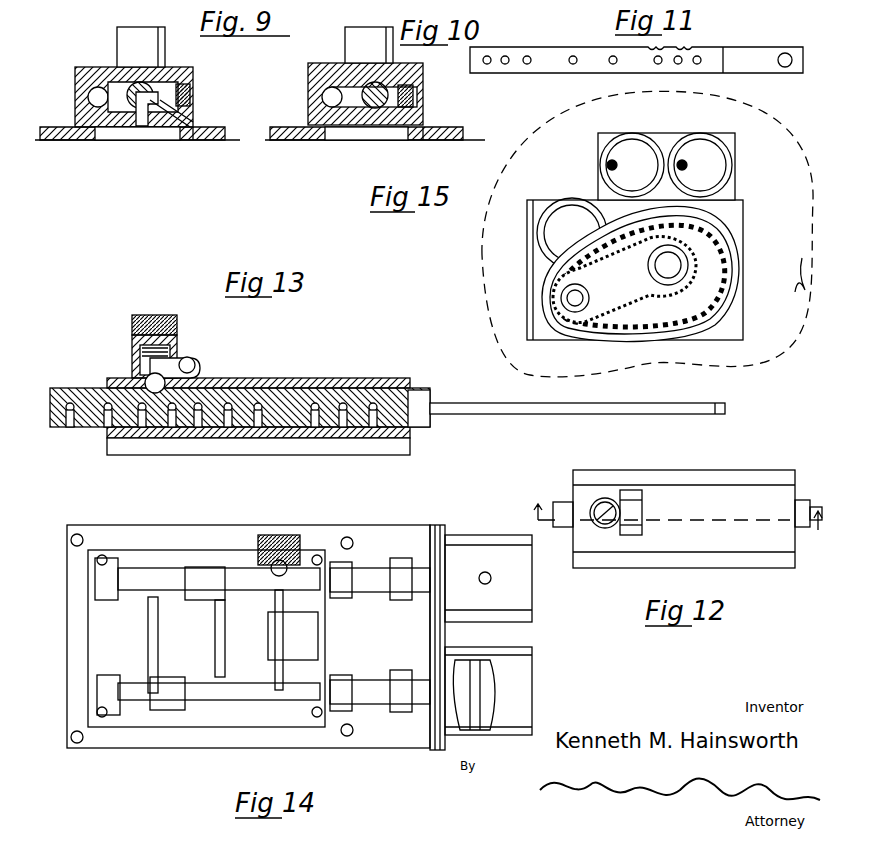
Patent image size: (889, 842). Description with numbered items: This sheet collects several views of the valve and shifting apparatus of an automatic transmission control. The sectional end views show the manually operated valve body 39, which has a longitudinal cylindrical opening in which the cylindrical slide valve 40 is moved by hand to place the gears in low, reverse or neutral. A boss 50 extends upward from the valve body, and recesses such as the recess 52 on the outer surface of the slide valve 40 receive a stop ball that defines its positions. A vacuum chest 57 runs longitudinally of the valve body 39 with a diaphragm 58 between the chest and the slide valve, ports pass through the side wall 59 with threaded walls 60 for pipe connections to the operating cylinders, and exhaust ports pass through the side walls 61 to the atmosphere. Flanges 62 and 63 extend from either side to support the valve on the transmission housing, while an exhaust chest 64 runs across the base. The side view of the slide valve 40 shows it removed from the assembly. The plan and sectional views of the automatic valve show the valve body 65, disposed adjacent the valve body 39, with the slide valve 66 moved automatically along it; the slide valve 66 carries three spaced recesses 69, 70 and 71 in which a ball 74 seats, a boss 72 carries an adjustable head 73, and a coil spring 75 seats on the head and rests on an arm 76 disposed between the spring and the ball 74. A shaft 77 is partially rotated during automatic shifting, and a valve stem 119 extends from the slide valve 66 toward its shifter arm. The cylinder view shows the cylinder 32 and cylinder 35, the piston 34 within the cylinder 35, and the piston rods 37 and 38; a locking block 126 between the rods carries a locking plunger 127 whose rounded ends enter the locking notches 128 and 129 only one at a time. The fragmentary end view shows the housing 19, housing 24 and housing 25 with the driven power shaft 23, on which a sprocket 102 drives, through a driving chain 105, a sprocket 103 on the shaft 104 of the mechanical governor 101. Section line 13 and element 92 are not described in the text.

In FIG. 12, the section line 13 is at (678, 530).
In FIG. 15, the housing 19 is at (718, 232).
In FIG. 15, the driven power shaft 23 is at (792, 277).
In FIG. 15, the housing 24 is at (548, 200).
In FIG. 15, the housing 25 is at (745, 200).
In FIG. 14, the housing 25 is at (200, 727).
In FIG. 15, the cylinder 32 is at (732, 150).
In FIG. 14, the cylinder 32 is at (467, 560).
In FIG. 14, the piston 34 is at (490, 680).
In FIG. 15, the cylinder 35 is at (640, 140).
In FIG. 14, the cylinder 35 is at (520, 655).
In FIG. 14, the piston rod 37 is at (365, 578).
In FIG. 14, the piston rod 38 is at (380, 700).
In FIG. 9, the valve body 39 is at (88, 130).
In FIG. 10, the valve body 39 is at (418, 80).
In FIG. 9, the slide valve 40 is at (150, 86).
In FIG. 10, the slide valve 40 is at (384, 85).
In FIG. 11, the slide valve 40 is at (540, 55).
In FIG. 9, the boss 50 is at (127, 46).
In FIG. 10, the boss 50 is at (355, 46).
In FIG. 11, the recess 52 is at (692, 47).
In FIG. 9, the vacuum chest 57 is at (88, 98).
In FIG. 10, the vacuum chest 57 is at (322, 97).
In FIG. 9, the diaphragm 58 is at (82, 82).
In FIG. 9, the side wall 59 is at (196, 115).
In FIG. 9, the threaded port walls 60 is at (192, 90).
In FIG. 9, the side walls 61 is at (141, 122).
In FIG. 9, the flange 62 is at (45, 142).
In FIG. 10, the flange 62 is at (285, 138).
In FIG. 9, the flange 63 is at (205, 132).
In FIG. 10, the flange 63 is at (440, 130).
In FIG. 9, the exhaust chest 64 is at (165, 133).
In FIG. 10, the exhaust chest 64 is at (348, 132).
In FIG. 13, the valve body 65 is at (380, 385).
In FIG. 12, the valve body 65 is at (708, 495).
In FIG. 13, the slide valve 66 is at (305, 388).
In FIG. 12, the slide valve 66 is at (800, 498).
In FIG. 13, the recess 69 is at (86, 430).
In FIG. 13, the recess 70 is at (152, 440).
In FIG. 13, the recess 71 is at (188, 440).
In FIG. 13, the boss 72 is at (132, 340).
In FIG. 12, the boss 72 is at (605, 535).
In FIG. 13, the adjustable head 73 is at (160, 318).
In FIG. 12, the adjustable head 73 is at (605, 498).
In FIG. 13, the ball 74 is at (168, 380).
In FIG. 13, the coil spring 75 is at (140, 356).
In FIG. 13, the arm 76 is at (180, 358).
In FIG. 12, the arm 76 is at (638, 495).
In FIG. 13, the shaft 77 is at (198, 362).
In FIG. 12, the shaft 77 is at (628, 540).
In FIG. 15, the wheel 92 is at (555, 245).
In FIG. 15, the mechanical governor 101 is at (672, 265).
In FIG. 15, the sprocket 102 is at (680, 292).
In FIG. 15, the sprocket 103 is at (590, 293).
In FIG. 15, the governor shaft 104 is at (575, 312).
In FIG. 15, the driving chain 105 is at (632, 310).
In FIG. 13, the valve stem 119 is at (572, 414).
In FIG. 14, the locking block 126 is at (275, 632).
In FIG. 14, the locking plunger 127 is at (200, 635).
In FIG. 14, the locking notch 128 is at (276, 598).
In FIG. 14, the locking notch 129 is at (280, 690).